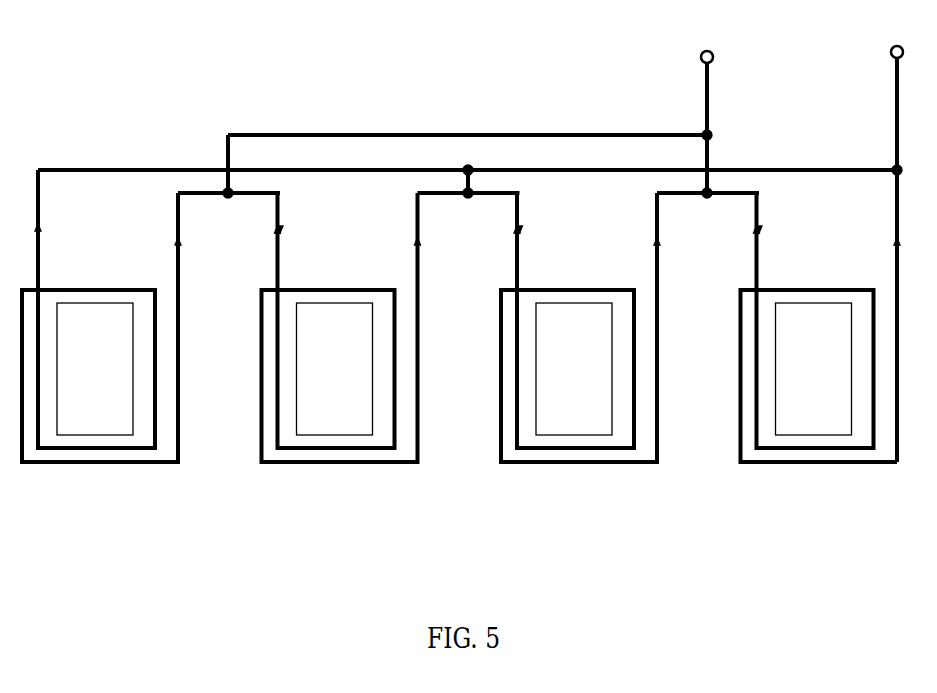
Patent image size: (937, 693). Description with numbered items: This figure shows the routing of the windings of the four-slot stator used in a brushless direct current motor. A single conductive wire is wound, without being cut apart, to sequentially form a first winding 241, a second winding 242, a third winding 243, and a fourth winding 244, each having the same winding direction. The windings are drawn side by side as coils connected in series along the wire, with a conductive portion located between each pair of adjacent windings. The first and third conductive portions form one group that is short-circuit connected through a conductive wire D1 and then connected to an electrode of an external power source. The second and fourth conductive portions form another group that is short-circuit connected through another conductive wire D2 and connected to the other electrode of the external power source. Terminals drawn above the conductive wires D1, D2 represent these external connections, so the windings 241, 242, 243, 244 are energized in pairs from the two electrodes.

The first winding 241 is at (97, 450).
The second winding 242 is at (336, 450).
The third winding 243 is at (576, 450).
The fourth winding 244 is at (816, 450).
The conductive wire D1 is at (120, 168).
The conductive wire D2 is at (332, 133).